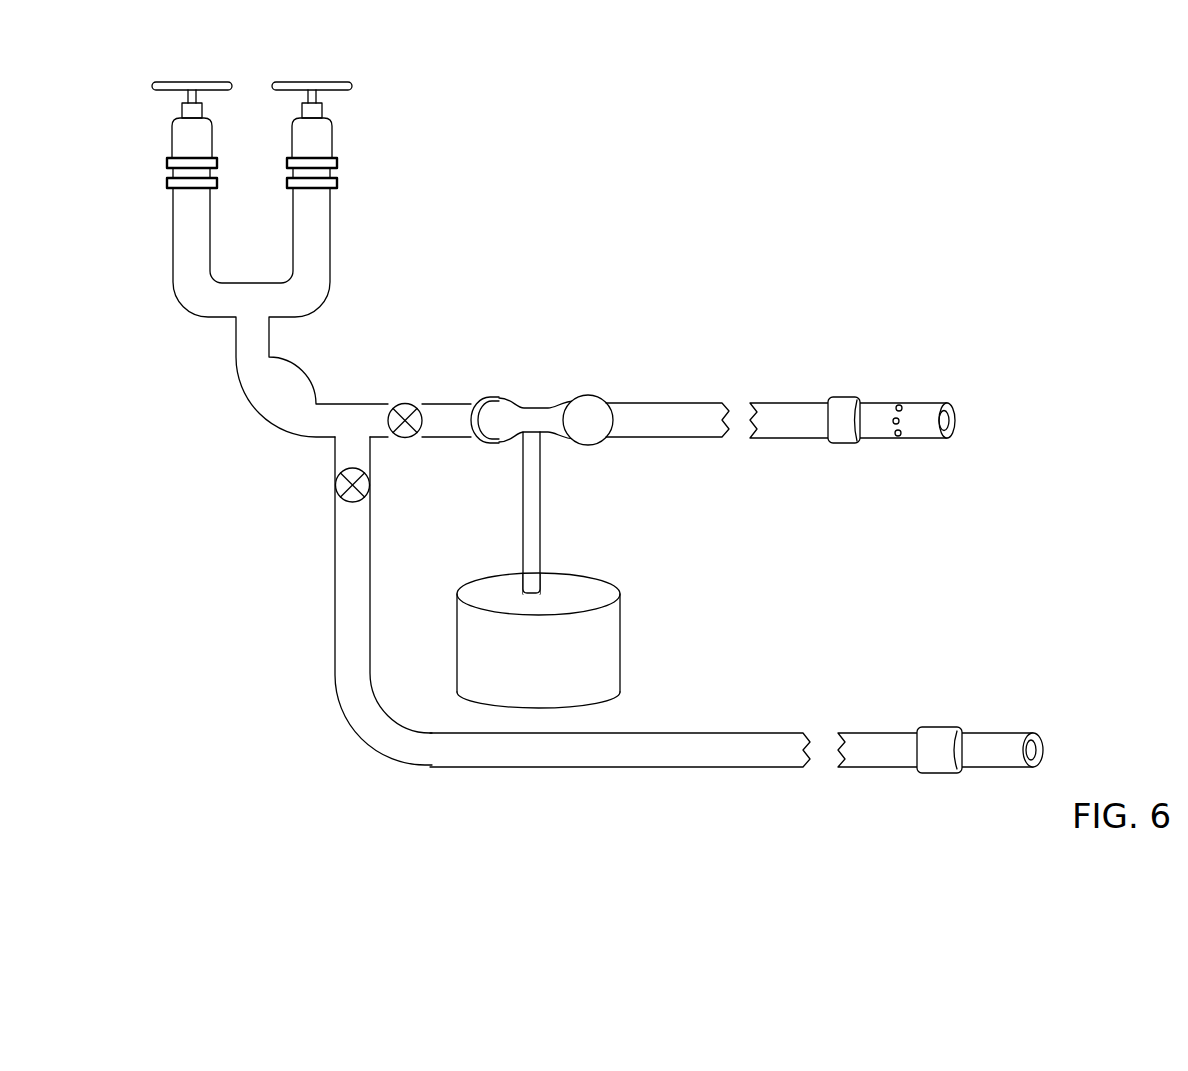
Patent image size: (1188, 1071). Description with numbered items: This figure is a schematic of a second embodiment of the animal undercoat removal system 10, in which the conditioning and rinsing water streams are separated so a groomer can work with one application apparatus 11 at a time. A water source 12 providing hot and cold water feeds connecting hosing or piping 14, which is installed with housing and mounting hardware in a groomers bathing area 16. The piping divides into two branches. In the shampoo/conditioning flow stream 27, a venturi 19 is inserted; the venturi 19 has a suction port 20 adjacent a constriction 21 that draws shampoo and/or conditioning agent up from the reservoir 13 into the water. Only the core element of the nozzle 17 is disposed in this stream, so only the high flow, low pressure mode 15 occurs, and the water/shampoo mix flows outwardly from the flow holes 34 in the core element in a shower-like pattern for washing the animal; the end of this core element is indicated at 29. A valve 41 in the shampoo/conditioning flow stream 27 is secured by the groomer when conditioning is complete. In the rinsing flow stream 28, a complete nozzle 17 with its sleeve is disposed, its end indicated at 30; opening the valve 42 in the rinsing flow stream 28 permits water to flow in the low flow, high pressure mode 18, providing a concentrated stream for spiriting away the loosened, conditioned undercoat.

The animal undercoat removal system 10 is at (622, 450).
The application apparatus 11 is at (929, 329).
The water source 12 is at (252, 261).
The reservoir 13 is at (603, 660).
The connecting hosing or piping 14 is at (609, 335).
The high flow, low pressure mode 15 is at (929, 366).
The groomers bathing area 16 is at (161, 586).
The nozzle 17 is at (867, 443).
The low flow, high pressure mode 18 is at (1023, 705).
The venturi 19 is at (523, 406).
The suction port 20 is at (542, 434).
The constriction 21 is at (541, 406).
The shampoo/conditioning flow stream 27 is at (661, 402).
The rinsing flow stream 28 is at (733, 733).
The distal end of first connector 29 is at (1014, 401).
The distal end of second connector 30 is at (1023, 681).
The flow holes 34 is at (900, 436).
The valve 41 is at (408, 405).
The valve 42 is at (337, 490).